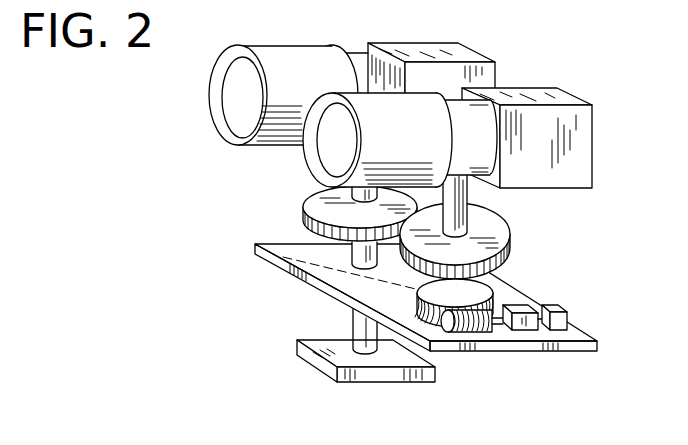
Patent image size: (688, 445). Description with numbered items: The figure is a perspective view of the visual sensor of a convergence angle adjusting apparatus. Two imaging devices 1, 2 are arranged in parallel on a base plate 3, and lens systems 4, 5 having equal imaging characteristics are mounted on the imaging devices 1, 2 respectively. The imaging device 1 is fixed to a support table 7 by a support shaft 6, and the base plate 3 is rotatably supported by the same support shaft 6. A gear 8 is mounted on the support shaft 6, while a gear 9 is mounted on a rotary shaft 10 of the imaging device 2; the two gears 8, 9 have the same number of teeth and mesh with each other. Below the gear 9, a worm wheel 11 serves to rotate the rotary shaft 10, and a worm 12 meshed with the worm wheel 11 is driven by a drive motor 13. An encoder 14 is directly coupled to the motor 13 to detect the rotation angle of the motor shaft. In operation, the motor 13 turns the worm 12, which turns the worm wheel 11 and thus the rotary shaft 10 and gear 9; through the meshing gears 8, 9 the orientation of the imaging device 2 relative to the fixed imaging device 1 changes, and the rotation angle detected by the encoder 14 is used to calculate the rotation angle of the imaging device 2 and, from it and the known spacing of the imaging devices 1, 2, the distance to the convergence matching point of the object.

The imaging device 1 is at (468, 52).
The imaging device 2 is at (580, 137).
The base plate 3 is at (597, 345).
The lens system 4 is at (280, 54).
The lens system 5 is at (302, 157).
The support shaft 6 is at (352, 257).
The support table 7 is at (392, 375).
The gear 8 is at (303, 213).
The gear 9 is at (493, 238).
The rotary shaft 10 is at (453, 193).
The worm wheel 11 is at (434, 330).
The worm 12 is at (470, 329).
The drive motor 13 is at (528, 330).
The encoder 14 is at (562, 319).